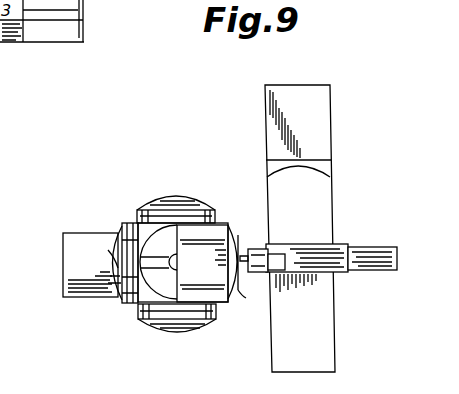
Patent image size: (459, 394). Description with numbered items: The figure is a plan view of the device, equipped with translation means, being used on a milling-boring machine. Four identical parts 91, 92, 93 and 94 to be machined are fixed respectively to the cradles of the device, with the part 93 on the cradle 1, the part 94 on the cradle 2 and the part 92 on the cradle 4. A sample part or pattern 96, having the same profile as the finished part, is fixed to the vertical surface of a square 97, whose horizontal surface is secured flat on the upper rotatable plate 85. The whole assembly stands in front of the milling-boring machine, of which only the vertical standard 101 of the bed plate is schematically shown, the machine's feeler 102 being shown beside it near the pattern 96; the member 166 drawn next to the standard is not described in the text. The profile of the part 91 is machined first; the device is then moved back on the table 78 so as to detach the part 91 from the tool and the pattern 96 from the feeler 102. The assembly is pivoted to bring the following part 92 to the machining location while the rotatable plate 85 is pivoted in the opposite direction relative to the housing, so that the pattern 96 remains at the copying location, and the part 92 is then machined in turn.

The table 78 is at (72, 254).
The part 93 is at (115, 287).
The cradle 1 is at (128, 305).
The upper rotatable plate 85 is at (157, 250).
The cradle 2 is at (148, 207).
The part 94 is at (176, 200).
The square 97 is at (218, 227).
The feeler 102 is at (246, 247).
The bar 166 is at (267, 242).
The vertical standard 101 is at (332, 207).
The part 92 is at (163, 323).
The cradle 4 is at (204, 322).
The sample part or pattern 96 is at (243, 263).
The part 91 is at (248, 320).